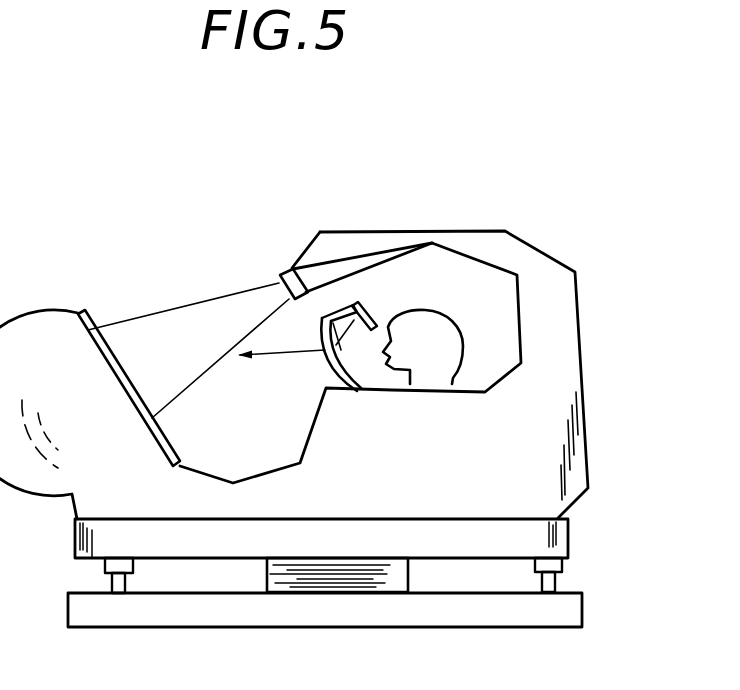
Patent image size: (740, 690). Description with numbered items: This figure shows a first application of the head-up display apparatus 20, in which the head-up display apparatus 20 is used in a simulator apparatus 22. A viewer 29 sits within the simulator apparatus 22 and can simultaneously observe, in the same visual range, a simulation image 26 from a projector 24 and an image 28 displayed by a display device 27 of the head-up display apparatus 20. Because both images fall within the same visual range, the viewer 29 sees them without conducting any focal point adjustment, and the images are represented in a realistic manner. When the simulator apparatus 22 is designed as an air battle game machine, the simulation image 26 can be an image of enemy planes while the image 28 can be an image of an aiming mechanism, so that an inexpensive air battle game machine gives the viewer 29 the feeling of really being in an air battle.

The head-up display apparatus 20 is at (382, 409).
The simulator apparatus 22 is at (596, 532).
The projector 24 is at (290, 270).
The simulation image 26 is at (110, 347).
The display device 27 is at (369, 310).
The image 28 is at (362, 323).
The viewer 29 is at (448, 342).